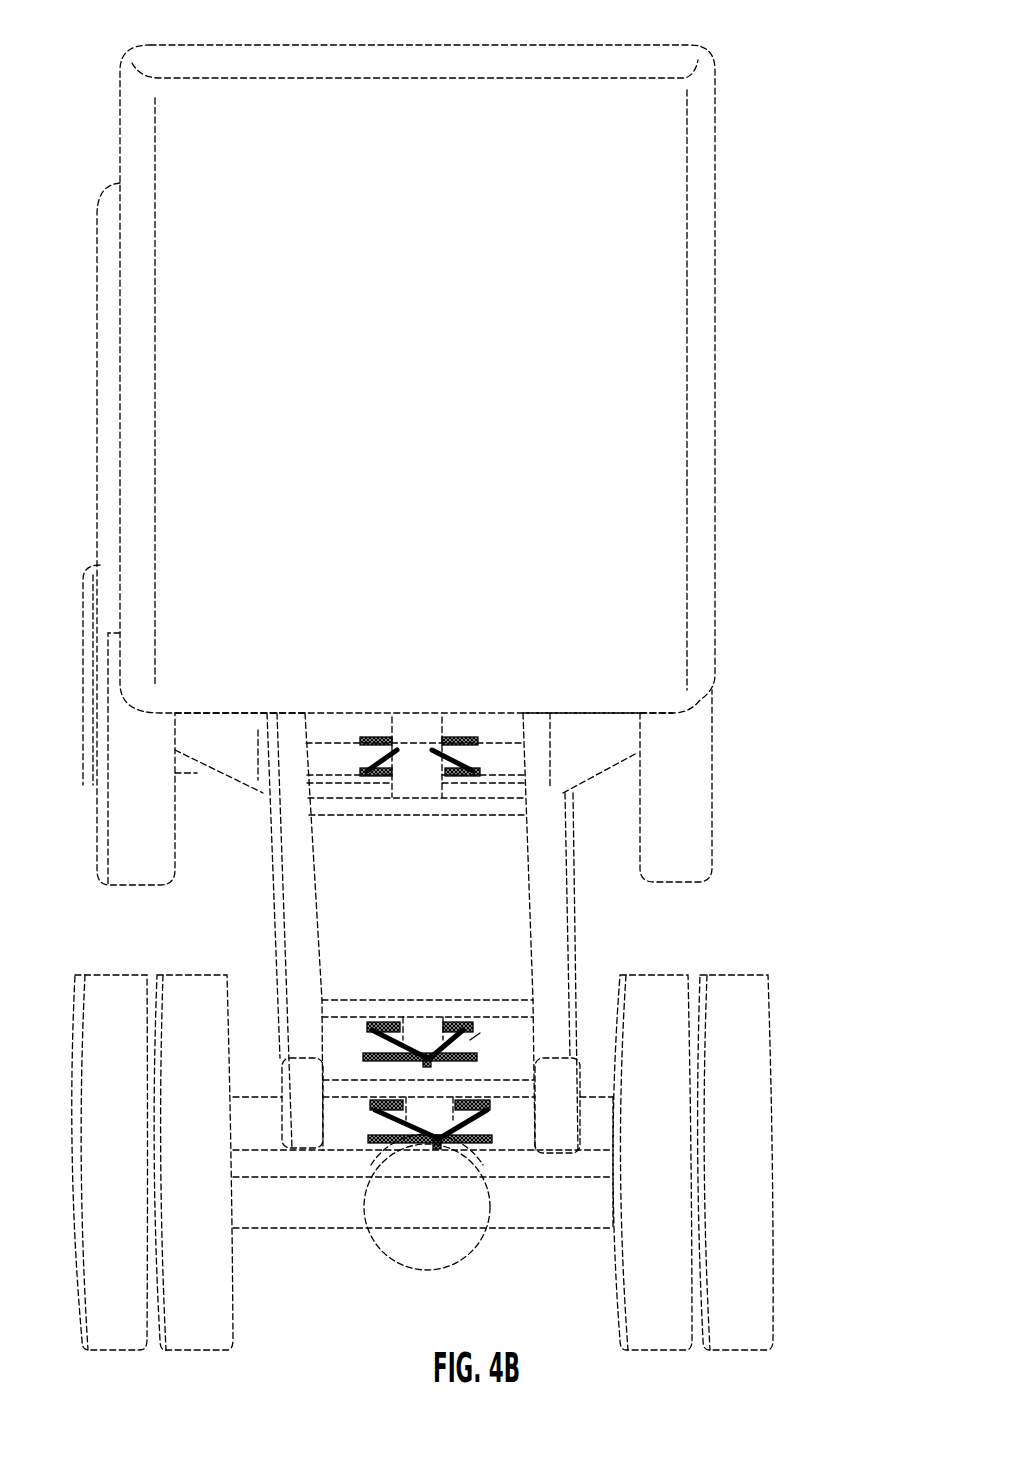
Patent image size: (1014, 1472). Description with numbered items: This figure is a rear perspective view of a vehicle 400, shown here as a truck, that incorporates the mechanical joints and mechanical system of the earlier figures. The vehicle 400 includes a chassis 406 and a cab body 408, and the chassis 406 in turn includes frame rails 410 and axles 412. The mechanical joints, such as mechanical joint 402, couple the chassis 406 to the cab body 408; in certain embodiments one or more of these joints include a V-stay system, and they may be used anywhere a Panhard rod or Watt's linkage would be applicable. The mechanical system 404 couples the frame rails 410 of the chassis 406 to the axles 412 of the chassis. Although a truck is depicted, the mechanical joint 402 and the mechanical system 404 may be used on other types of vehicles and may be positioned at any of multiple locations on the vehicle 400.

The vehicle 400 is at (790, 135).
The mechanical joint 402 is at (482, 747).
The mechanical system 404 is at (464, 1042).
The chassis 406 is at (528, 898).
The cab body 408 is at (635, 296).
The frame rails 410 is at (527, 880).
The axles 412 is at (257, 1187).